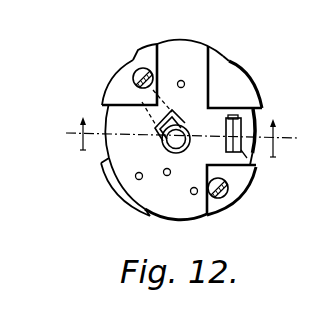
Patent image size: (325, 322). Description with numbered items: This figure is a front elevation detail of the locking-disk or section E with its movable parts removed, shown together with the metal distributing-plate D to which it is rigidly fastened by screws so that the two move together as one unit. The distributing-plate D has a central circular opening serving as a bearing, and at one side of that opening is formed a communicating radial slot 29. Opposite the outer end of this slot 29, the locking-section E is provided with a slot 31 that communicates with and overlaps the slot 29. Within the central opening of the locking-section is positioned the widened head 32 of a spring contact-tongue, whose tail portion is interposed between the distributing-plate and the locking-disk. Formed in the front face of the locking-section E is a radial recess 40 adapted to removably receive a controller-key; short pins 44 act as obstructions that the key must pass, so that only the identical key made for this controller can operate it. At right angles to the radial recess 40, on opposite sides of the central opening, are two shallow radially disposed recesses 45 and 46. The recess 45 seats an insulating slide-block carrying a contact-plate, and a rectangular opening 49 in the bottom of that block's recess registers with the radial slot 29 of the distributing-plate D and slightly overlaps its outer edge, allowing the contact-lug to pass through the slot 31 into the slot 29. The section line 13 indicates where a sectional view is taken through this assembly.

The radial recess 40 is at (190, 51).
The locking-disk or section E is at (233, 82).
The shallow radially disposed recess 45 is at (238, 114).
The distributing-plate D is at (252, 118).
The section line 13- 13 is at (182, 138).
The radial slot 29 is at (247, 158).
The slot 31 is at (244, 176).
The rectangular opening 49 is at (226, 141).
The short pins 44 is at (193, 195).
The widened head 32 is at (111, 162).
The shallow radially disposed recess 46 is at (168, 141).